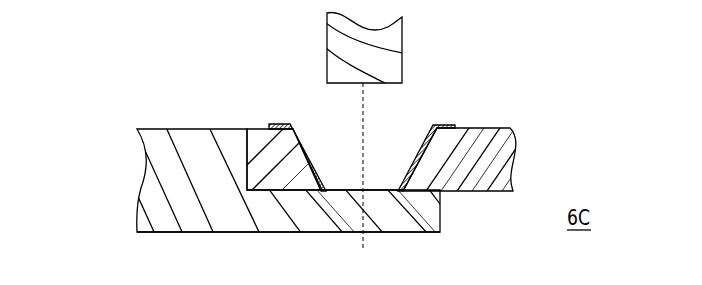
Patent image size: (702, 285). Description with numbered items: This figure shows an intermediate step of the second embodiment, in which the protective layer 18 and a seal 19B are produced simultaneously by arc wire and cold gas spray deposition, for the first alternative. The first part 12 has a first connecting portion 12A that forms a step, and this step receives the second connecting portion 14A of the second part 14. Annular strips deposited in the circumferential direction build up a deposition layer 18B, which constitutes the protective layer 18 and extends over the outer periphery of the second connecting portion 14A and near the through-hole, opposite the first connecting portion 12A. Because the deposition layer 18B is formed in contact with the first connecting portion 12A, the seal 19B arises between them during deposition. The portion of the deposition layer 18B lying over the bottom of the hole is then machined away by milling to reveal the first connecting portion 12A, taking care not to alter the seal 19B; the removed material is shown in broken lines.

The first part 12 is at (168, 134).
The first connecting portion 12A is at (404, 226).
The second part 14 is at (493, 128).
The second connecting portion 14A is at (264, 134).
The protective layer 18 is at (309, 138).
The deposition layer 18B is at (412, 158).
The seal 19B is at (334, 188).